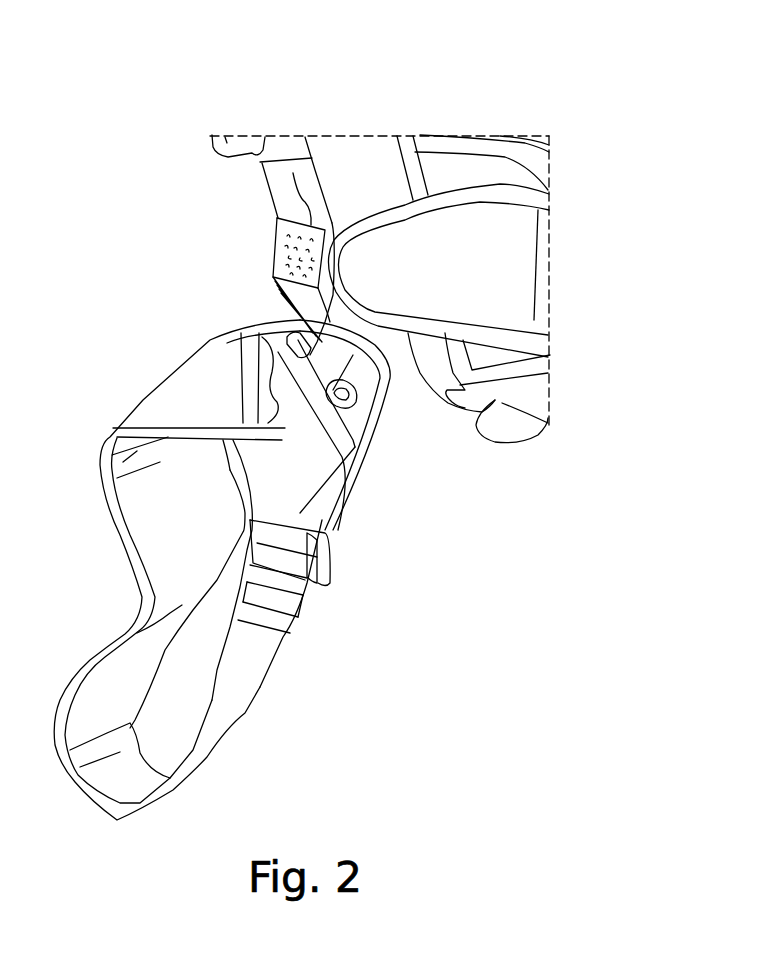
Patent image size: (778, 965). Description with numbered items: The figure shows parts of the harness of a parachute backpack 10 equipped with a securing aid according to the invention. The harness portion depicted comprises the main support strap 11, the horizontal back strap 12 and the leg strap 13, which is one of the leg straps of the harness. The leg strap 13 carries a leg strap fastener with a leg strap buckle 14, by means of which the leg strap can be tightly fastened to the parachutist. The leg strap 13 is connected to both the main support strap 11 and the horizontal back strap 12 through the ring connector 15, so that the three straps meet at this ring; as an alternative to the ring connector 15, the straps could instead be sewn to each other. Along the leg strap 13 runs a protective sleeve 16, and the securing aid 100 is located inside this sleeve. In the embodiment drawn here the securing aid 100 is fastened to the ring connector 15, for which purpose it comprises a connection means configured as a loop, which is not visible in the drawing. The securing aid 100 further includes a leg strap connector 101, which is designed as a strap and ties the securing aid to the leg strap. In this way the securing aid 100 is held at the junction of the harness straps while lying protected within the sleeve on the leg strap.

The parachute backpack 10 is at (516, 110).
The main support strap 11 is at (262, 187).
The horizontal back strap 12 is at (500, 263).
The leg strap 13 is at (227, 707).
The leg strap buckle 14 is at (314, 600).
The ring connector 15 is at (288, 322).
The protective sleeve 16 is at (368, 535).
The securing aid 100 is at (290, 553).
The leg strap connector 101 is at (348, 410).